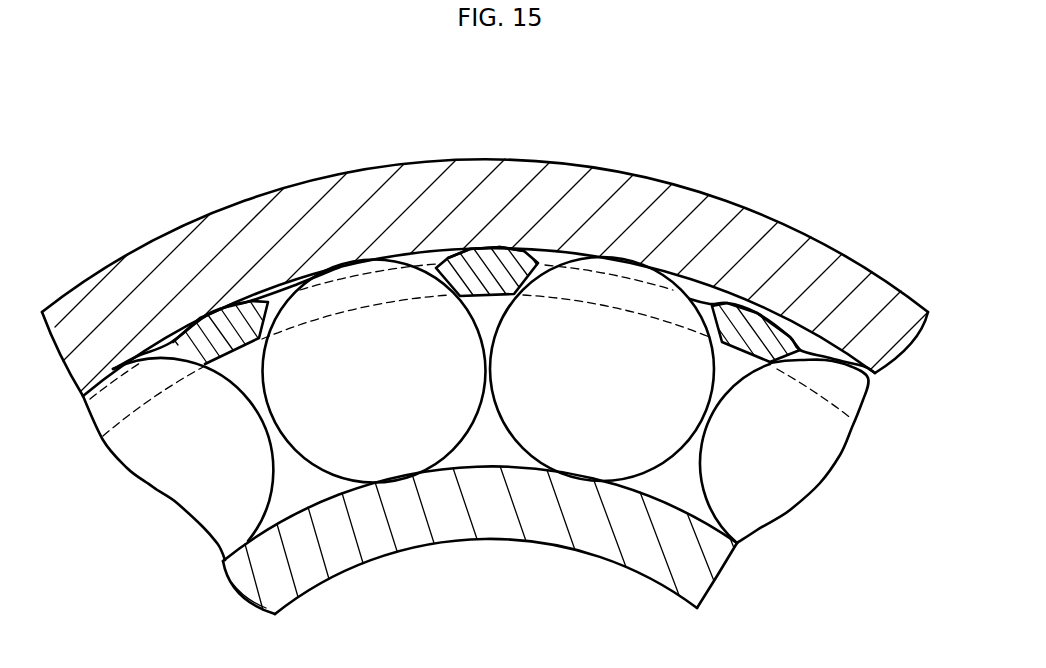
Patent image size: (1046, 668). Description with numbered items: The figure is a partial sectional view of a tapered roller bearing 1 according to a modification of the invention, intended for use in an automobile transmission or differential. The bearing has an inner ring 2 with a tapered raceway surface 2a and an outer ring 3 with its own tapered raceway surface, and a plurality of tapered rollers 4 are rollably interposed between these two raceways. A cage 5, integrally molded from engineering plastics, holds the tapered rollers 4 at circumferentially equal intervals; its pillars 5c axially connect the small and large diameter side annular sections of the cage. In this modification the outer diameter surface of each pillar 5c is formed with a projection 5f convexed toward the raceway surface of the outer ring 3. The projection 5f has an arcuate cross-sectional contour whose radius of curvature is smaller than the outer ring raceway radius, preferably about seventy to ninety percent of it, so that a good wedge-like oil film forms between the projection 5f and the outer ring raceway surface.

The tapered roller bearing 1 is at (732, 161).
The inner ring 2 is at (712, 558).
The tapered raceway surface 2a is at (660, 496).
The outer ring 3 is at (895, 348).
The tapered rollers 4 is at (588, 283).
The cage 5 is at (814, 358).
The pillars 5c is at (503, 261).
The projections 5f is at (473, 247).